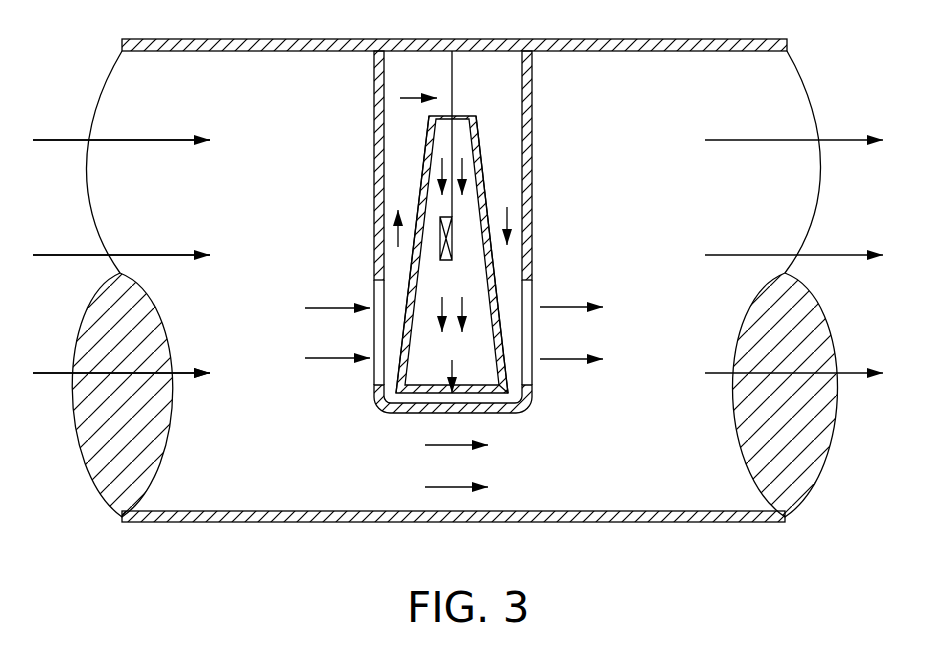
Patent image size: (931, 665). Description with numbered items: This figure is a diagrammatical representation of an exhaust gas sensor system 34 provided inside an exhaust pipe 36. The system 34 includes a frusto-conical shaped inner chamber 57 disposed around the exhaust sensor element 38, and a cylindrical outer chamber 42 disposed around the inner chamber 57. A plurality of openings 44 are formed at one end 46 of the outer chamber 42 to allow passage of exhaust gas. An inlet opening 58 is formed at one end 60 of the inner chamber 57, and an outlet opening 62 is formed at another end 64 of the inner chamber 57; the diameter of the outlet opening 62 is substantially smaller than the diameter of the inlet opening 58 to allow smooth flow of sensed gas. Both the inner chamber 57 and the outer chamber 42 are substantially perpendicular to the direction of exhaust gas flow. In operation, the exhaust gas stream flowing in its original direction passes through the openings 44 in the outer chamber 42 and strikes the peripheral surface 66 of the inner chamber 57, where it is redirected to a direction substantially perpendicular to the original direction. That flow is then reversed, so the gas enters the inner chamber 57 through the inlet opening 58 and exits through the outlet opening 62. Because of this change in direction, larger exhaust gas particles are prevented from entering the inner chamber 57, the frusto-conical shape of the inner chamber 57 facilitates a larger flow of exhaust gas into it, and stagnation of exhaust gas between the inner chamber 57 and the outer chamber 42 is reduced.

The exhaust gas sensor system 34 is at (372, 103).
The exhaust pipe 36 is at (693, 523).
The exhaust sensor element 38 is at (453, 247).
The outer chamber 42 is at (532, 92).
The openings 44 is at (374, 298).
The end of the outer chamber 46 is at (392, 414).
The inner chamber 57 is at (495, 268).
The inlet opening 58 is at (460, 117).
The end of the inner chamber 60 is at (481, 143).
The outlet opening 62 is at (457, 398).
The another end of the inner chamber 64 is at (507, 376).
The peripheral surface 66 is at (412, 271).